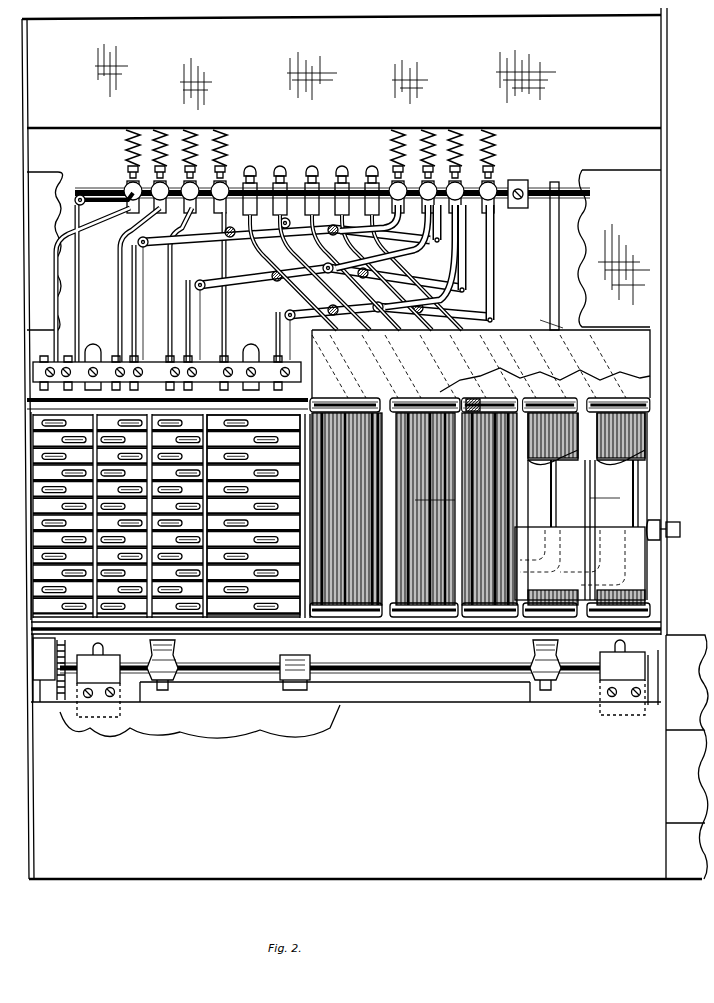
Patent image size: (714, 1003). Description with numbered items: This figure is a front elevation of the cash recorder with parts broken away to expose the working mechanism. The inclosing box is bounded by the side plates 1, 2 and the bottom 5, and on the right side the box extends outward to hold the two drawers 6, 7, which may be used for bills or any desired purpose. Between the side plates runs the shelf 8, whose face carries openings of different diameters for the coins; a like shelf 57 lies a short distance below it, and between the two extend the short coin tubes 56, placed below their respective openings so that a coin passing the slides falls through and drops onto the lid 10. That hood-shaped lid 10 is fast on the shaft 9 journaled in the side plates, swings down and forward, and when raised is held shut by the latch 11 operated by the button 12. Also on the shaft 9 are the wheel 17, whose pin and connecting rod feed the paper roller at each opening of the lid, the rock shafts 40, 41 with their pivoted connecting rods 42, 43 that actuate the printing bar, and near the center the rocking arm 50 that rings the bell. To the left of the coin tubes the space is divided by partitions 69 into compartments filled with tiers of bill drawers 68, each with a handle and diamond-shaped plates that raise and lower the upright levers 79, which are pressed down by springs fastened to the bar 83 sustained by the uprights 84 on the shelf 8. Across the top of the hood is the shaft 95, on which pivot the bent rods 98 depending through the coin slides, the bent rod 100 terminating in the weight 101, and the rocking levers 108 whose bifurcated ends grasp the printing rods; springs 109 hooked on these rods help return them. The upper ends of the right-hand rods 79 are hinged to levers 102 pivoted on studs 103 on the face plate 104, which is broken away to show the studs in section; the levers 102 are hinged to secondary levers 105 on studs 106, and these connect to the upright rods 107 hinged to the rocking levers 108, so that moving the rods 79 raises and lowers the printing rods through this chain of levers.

The side plate 1 is at (673, 443).
The side plate 2 is at (333, 447).
The bottom 5 is at (365, 887).
The drawer 6 is at (687, 682).
The drawer 7 is at (687, 804).
The shelf 8 is at (650, 408).
The shaft 9 is at (350, 661).
The lid 10 is at (346, 721).
The latch 11 is at (653, 523).
The button 12 is at (678, 529).
The wheel 17 is at (58, 658).
The rock shaft 40 is at (158, 655).
The rock shaft 41 is at (560, 650).
The connecting rod 42 is at (178, 645).
The connecting rod 43 is at (538, 665).
The rocking arm 50 is at (295, 665).
The coin tube 56 is at (479, 509).
The shelf 57 is at (355, 655).
The drawer 68 is at (253, 515).
The partition 69 is at (214, 525).
The upright lever 79 is at (310, 248).
The bar 83 is at (298, 350).
The upright 84 is at (167, 291).
The shaft 95 is at (332, 188).
The rod 98 is at (591, 493).
The bent rod 100 is at (527, 347).
The weight 101 is at (481, 465).
The lever 102 is at (112, 192).
The stud 103 is at (314, 272).
The face plate 104 is at (344, 244).
The secondary lever 105 is at (395, 263).
The stud 106 is at (398, 273).
The upright rod 107 is at (505, 268).
The rocking lever 108 is at (498, 175).
The spring 109 is at (228, 150).